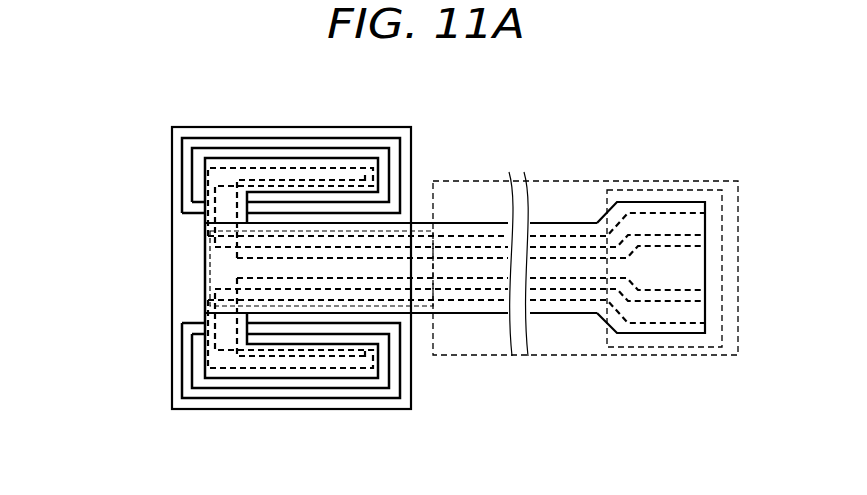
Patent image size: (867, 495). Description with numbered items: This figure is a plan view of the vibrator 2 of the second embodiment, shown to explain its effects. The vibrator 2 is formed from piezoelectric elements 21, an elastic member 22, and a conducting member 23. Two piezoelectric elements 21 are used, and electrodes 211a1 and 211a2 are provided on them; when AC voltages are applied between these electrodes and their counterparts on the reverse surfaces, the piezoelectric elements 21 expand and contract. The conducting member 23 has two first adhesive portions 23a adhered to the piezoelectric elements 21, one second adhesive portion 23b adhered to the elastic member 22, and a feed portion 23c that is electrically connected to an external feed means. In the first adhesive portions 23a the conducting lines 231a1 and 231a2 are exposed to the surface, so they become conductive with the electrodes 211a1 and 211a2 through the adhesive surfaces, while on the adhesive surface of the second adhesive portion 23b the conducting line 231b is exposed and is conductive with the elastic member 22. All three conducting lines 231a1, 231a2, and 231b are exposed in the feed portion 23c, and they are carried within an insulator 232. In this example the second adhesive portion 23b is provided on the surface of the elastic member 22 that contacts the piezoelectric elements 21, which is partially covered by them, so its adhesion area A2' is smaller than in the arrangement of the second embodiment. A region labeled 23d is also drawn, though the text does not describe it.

The vibrator 2 is at (110, 95).
The piezoelectric element 21 is at (244, 263).
The electrode 211a1 is at (255, 137).
The electrode 211a2 is at (251, 398).
The elastic member 22 is at (172, 304).
The conducting member 23 is at (552, 222).
The first adhesive portion 23a is at (361, 167).
The second adhesive portion 23b is at (208, 242).
The feed portion 23c is at (708, 186).
The terminal region 23d is at (692, 357).
The conducting line 231a1 is at (698, 226).
The conducting line 231a2 is at (698, 311).
The conducting line 231b is at (698, 269).
The insulator 232 is at (583, 222).